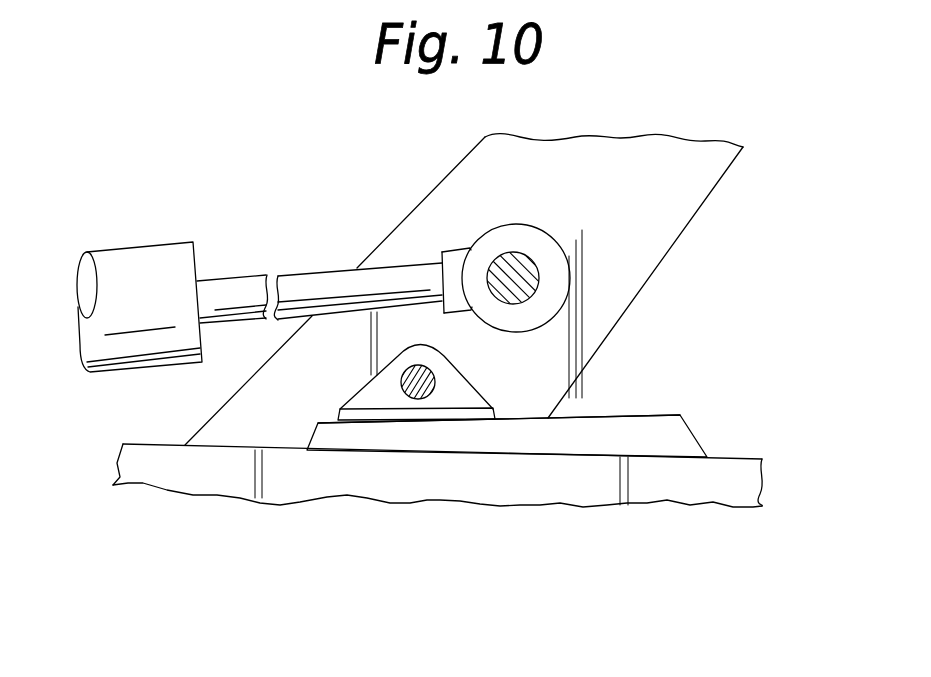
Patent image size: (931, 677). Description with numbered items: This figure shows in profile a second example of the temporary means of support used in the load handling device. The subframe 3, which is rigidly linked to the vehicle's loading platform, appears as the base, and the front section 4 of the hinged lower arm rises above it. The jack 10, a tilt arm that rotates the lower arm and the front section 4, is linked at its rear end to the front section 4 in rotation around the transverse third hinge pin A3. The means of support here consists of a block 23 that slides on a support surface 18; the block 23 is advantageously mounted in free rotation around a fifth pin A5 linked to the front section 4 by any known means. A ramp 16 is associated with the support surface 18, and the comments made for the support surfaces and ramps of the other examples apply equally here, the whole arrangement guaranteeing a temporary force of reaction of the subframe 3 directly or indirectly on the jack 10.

The subframe 3 is at (745, 487).
The front section 4 is at (697, 188).
The jack 10 is at (298, 285).
The ramp 16 is at (680, 440).
The support surface 18 is at (666, 413).
The block 23 is at (470, 397).
The third hinge pin A3 is at (527, 277).
The fifth pin A5 is at (435, 378).